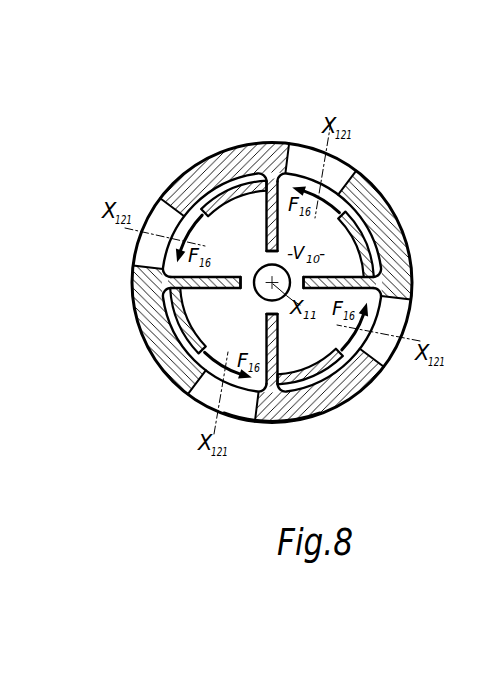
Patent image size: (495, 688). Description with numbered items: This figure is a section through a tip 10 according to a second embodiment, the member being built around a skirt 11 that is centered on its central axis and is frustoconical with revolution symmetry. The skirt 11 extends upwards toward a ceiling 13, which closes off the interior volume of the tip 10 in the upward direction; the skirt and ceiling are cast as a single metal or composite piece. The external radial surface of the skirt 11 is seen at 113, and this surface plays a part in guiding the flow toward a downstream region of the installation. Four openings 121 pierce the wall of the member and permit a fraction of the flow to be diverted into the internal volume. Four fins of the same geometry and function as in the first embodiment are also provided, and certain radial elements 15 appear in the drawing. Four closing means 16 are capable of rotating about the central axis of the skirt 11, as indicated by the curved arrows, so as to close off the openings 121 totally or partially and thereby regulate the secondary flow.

The tip 10 is at (164, 141).
The skirt 11 is at (368, 386).
The external radial surface of the skirt 113 is at (285, 432).
The ceiling 13 is at (247, 223).
The radial wall 15 is at (269, 205).
The closing means 16 is at (178, 170).
The openings 121 is at (341, 167).